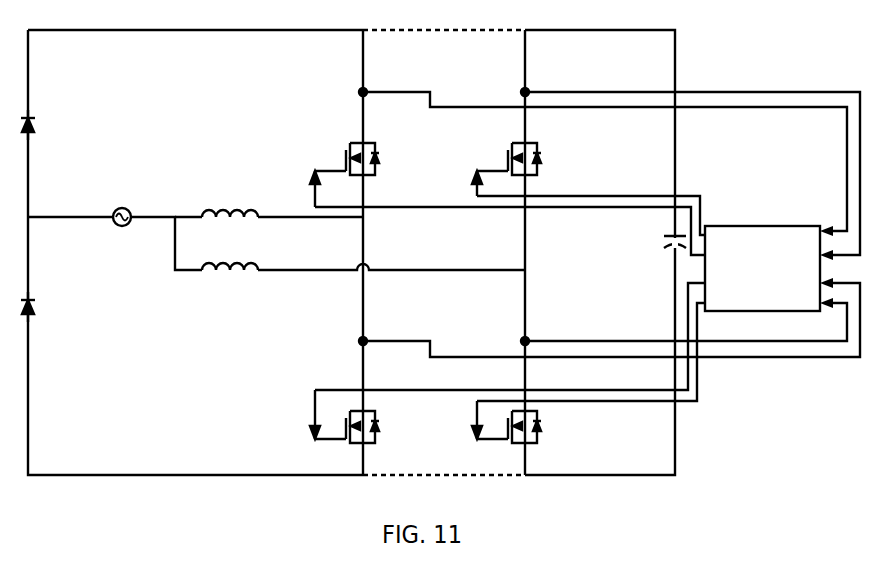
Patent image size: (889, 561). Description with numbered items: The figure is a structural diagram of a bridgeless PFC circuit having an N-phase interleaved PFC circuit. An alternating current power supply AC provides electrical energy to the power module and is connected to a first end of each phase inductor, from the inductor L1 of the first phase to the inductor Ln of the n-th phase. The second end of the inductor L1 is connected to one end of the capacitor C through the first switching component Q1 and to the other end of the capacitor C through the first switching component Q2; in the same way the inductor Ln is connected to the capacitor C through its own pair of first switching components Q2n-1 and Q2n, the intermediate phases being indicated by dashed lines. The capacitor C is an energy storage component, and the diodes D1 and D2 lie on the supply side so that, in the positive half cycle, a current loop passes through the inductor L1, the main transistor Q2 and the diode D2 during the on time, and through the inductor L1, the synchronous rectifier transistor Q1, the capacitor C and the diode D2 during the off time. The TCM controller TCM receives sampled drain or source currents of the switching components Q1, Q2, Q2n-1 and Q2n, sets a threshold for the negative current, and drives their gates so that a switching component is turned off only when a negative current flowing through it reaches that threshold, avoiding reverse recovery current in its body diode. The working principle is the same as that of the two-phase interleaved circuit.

The diode D1 is at (45, 125).
The diode D2 is at (45, 307).
The alternating current power supply module AC is at (120, 229).
The inductor L1 is at (230, 200).
The inductor Ln is at (230, 281).
The first switching component Q1 is at (344, 167).
The first switching component Q2 is at (344, 402).
The first switching component Q2n-1 is at (500, 162).
The first switching component Q2n is at (506, 403).
The capacitor C is at (665, 246).
The TCM controller TCM is at (762, 268).